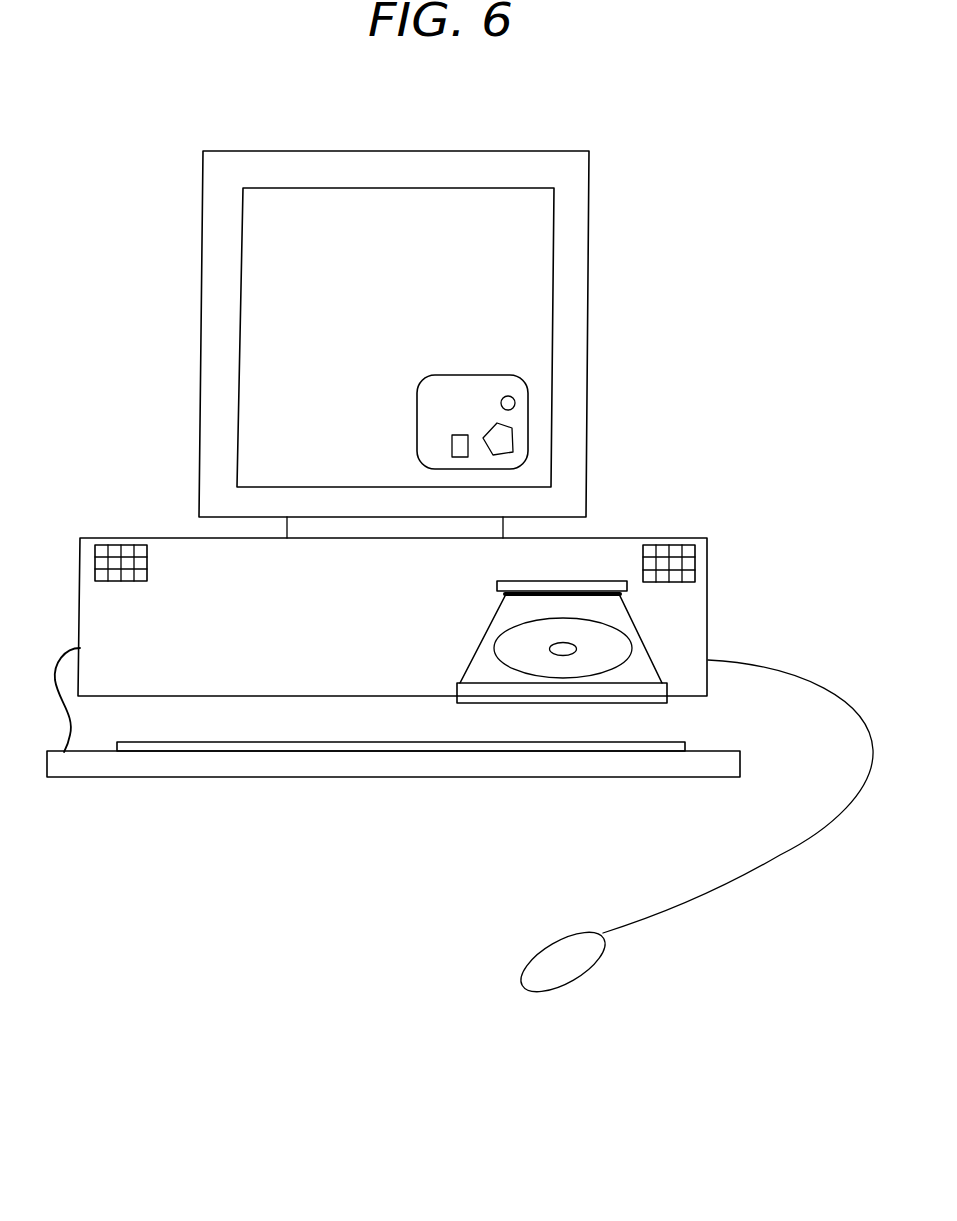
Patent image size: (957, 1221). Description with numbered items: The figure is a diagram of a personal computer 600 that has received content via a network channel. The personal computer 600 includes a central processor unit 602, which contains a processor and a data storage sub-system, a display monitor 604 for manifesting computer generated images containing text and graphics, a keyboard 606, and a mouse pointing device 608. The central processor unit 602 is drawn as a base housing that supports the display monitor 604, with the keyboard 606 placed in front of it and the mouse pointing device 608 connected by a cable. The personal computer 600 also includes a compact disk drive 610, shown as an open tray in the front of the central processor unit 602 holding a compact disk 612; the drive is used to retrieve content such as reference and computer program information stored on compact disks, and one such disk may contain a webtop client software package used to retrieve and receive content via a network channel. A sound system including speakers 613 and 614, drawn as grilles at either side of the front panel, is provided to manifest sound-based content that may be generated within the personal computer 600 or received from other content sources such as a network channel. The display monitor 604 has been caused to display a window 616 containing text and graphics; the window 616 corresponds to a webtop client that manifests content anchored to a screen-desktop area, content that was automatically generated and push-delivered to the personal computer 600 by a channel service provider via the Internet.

The personal computer 600 is at (532, 128).
The central processor unit 602 is at (710, 583).
The display monitor 604 is at (589, 277).
The keyboard 606 is at (90, 765).
The mouse pointing device 608 is at (580, 978).
The compact disk drive 610 is at (622, 597).
The CD-ROM disc 612 is at (548, 670).
The speaker 613 is at (115, 538).
The speaker 614 is at (670, 545).
The window 616 is at (528, 418).